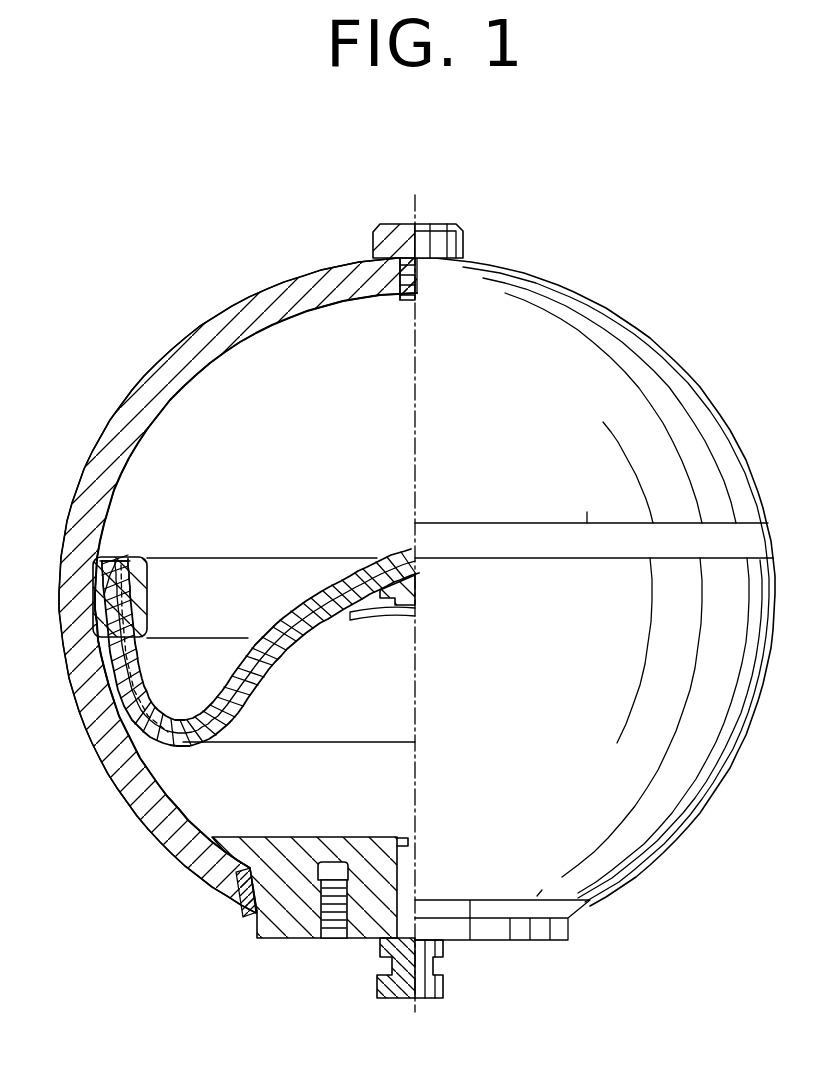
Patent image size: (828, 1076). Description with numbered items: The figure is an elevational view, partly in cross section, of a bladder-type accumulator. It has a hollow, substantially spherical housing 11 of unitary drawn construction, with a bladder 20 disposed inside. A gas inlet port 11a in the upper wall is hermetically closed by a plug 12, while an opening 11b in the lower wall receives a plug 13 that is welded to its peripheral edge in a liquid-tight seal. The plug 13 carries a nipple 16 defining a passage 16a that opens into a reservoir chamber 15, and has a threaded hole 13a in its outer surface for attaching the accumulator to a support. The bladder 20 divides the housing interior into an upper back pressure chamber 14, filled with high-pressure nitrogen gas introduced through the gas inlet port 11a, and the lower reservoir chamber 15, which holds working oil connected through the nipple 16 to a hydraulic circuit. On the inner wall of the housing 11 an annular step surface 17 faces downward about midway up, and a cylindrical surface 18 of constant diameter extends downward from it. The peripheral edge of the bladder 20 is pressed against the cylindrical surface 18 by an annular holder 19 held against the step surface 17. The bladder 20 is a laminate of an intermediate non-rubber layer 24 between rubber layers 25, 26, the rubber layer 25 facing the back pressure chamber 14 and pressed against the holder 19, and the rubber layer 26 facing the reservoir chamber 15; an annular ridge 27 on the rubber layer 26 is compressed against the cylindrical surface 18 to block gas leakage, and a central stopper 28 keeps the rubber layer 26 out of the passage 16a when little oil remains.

The housing 11 is at (290, 281).
The gas inlet port 11a is at (408, 303).
The opening 11b is at (245, 900).
The plug 12 is at (396, 226).
The plug 13 is at (285, 940).
The threaded hole 13a is at (343, 940).
The back pressure chamber 14 is at (364, 456).
The reservoir chamber 15 is at (254, 801).
The nipple 16 is at (432, 999).
The passage 16a is at (403, 840).
The annular step surface 17 is at (93, 572).
The cylindrical surface 18 is at (82, 645).
The annular holder 19 is at (148, 590).
The bladder 20 is at (260, 613).
The non-rubber layer 24 is at (332, 608).
The rubber layer 25 is at (372, 566).
The rubber layer 26 is at (270, 668).
The annular ridge 27 is at (106, 600).
The stopper 28 is at (390, 621).